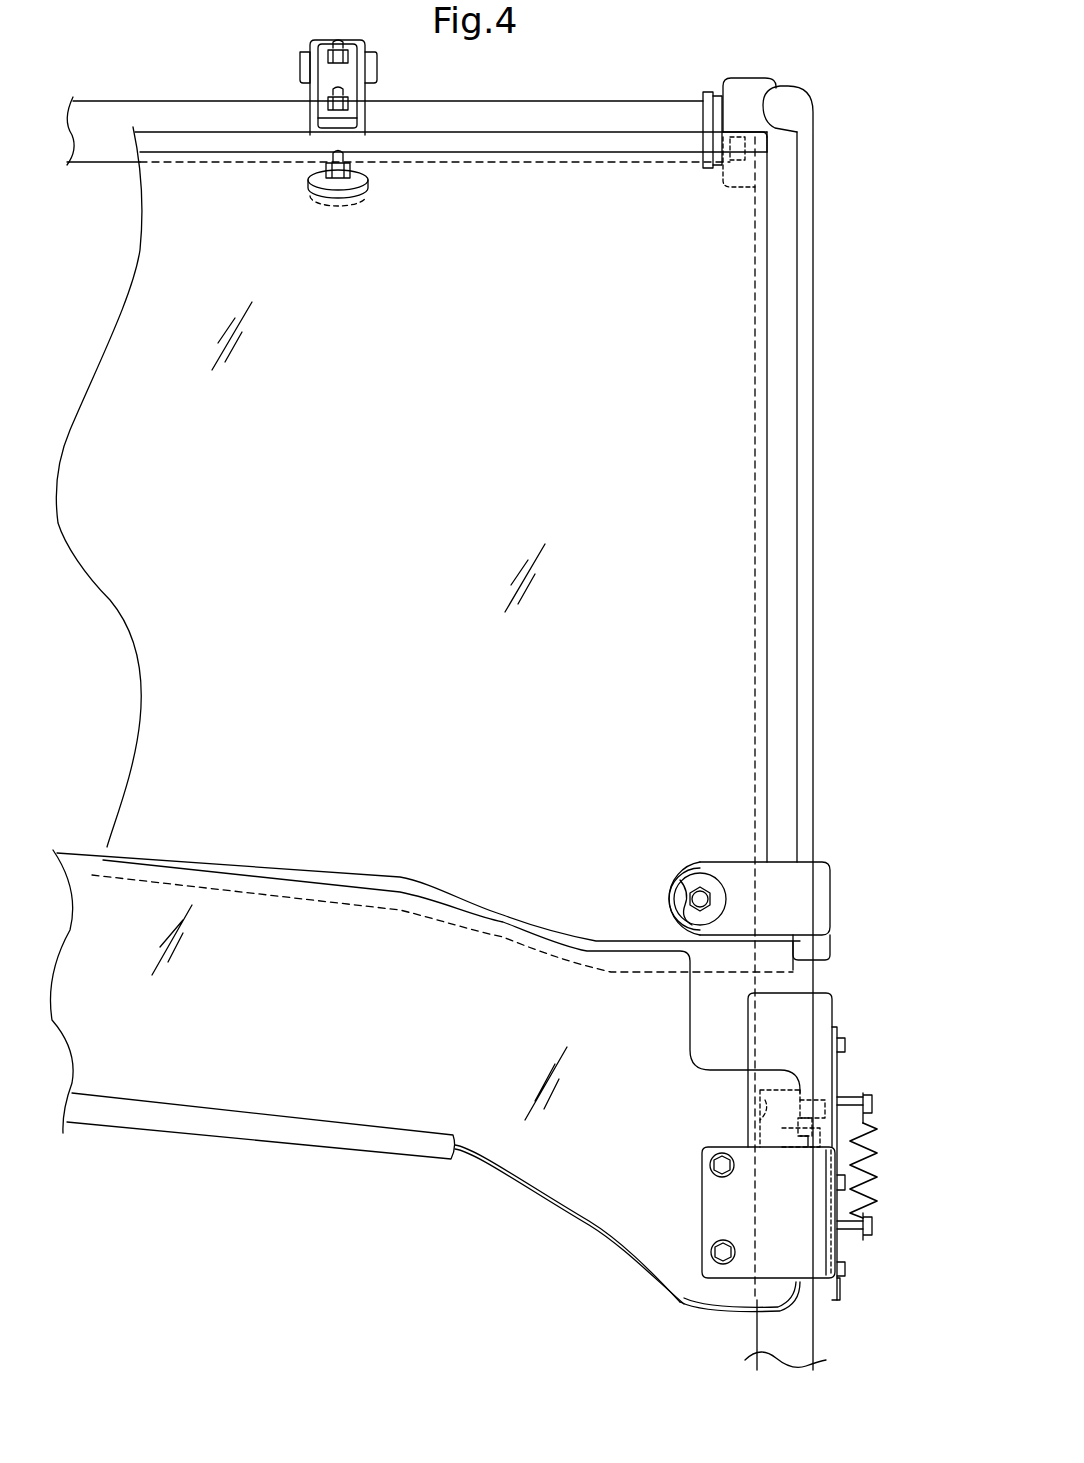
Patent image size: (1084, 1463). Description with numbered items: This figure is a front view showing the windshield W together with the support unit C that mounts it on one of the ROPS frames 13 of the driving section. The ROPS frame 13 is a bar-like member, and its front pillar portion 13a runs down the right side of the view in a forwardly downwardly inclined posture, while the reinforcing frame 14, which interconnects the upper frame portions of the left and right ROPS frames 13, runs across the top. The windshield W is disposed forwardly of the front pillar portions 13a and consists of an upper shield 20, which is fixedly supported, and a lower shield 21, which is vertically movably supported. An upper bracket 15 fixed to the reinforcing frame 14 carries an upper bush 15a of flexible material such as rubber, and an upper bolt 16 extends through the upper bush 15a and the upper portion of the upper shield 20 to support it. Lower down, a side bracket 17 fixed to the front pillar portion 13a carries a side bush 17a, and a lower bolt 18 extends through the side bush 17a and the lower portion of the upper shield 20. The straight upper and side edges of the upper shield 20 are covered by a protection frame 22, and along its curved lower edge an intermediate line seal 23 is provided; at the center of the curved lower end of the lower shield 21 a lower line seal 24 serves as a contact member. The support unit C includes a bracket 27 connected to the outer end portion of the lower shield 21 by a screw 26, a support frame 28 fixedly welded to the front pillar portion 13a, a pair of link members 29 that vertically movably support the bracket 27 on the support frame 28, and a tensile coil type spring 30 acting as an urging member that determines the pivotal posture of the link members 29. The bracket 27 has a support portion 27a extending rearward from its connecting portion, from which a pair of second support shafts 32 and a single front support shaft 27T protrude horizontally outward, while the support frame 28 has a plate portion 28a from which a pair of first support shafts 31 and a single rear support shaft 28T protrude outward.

The front pillar portion 13a is at (849, 728).
The ROPS frame 13 is at (820, 490).
The reinforcing frame 14 is at (500, 74).
The upper bracket 15 is at (300, 75).
The upper bush 15a is at (347, 200).
The upper bolt 16 is at (350, 165).
The side bracket 17 is at (744, 890).
The side bush 17a is at (677, 903).
The lower bolt 18 is at (693, 892).
The upper shield 20 is at (125, 332).
The lower shield 21 is at (477, 1152).
The protection frame 22 is at (593, 140).
The intermediate line seal 23 is at (413, 882).
The lower line seal 24 is at (250, 1128).
The screw 26 is at (716, 1160).
The bracket 27 is at (776, 1243).
The front support shaft 27T is at (872, 1222).
The support portion 27a is at (842, 1292).
The support frame 28 is at (768, 1030).
The plate portion 28a is at (832, 1013).
The rear support shaft 28T is at (870, 1105).
The link member 29 is at (838, 1070).
The tensile coil type spring 30 is at (880, 1168).
The first support shaft 31 is at (844, 1047).
The second support shaft 32 is at (848, 1270).
The support unit C is at (902, 1163).
The windshield W is at (849, 707).